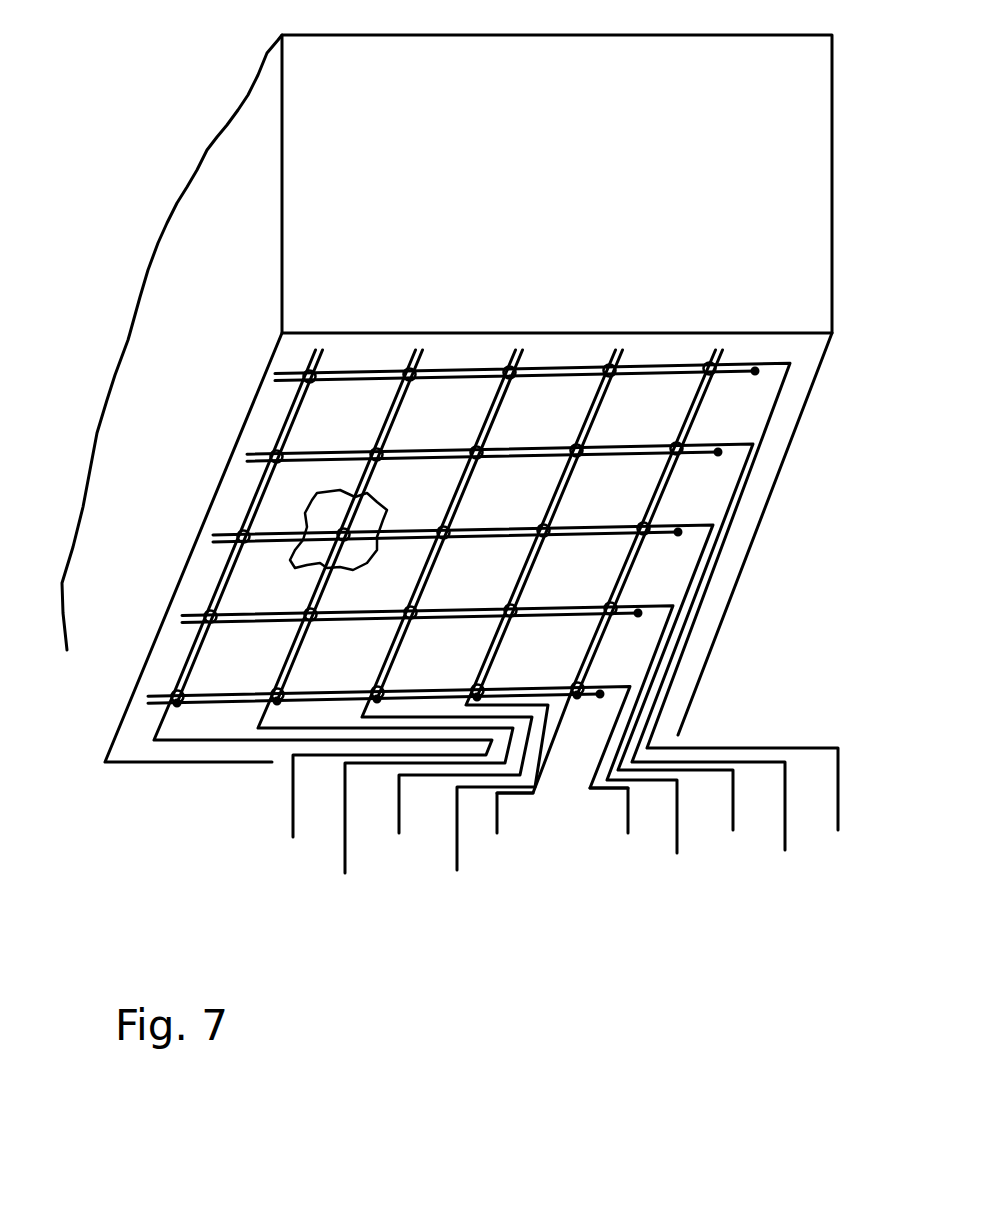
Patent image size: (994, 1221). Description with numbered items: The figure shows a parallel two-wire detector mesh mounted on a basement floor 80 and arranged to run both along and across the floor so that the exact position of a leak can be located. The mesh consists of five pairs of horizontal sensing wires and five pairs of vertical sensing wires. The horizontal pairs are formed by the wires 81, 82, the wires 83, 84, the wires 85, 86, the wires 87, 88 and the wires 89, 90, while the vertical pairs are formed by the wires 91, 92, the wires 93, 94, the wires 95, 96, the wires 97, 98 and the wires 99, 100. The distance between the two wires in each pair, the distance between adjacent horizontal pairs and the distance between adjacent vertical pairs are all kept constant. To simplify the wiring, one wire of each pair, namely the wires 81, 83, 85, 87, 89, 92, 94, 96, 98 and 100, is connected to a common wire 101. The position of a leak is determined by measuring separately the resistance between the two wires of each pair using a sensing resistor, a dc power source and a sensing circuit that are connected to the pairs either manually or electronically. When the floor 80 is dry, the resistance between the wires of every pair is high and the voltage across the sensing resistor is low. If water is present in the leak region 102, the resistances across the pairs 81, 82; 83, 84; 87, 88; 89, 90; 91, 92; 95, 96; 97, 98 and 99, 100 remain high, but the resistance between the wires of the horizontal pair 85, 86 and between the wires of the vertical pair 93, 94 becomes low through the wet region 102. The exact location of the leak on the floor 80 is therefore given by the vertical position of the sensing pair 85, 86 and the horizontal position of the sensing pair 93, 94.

The basement floor 80 is at (792, 352).
The sensing wire 81 is at (138, 708).
The sensing wire 82 is at (142, 700).
The sensing wire 83 is at (176, 622).
The sensing wire 84 is at (180, 614).
The sensing wire 85 is at (212, 541).
The sensing wire 86 is at (212, 533).
The sensing wire 87 is at (246, 455).
The sensing wire 88 is at (243, 448).
The sensing wire 89 is at (270, 378).
The sensing wire 90 is at (273, 366).
The sensing wire 91 is at (314, 350).
The sensing wire 92 is at (323, 352).
The sensing wire 93 is at (410, 350).
The sensing wire 94 is at (420, 350).
The sensing wire 95 is at (513, 350).
The sensing wire 96 is at (522, 350).
The sensing wire 97 is at (610, 350).
The sensing wire 98 is at (619, 350).
The sensing wire 99 is at (712, 350).
The sensing wire 100 is at (720, 350).
The common wire 101 is at (712, 493).
The leak region 102 is at (362, 497).